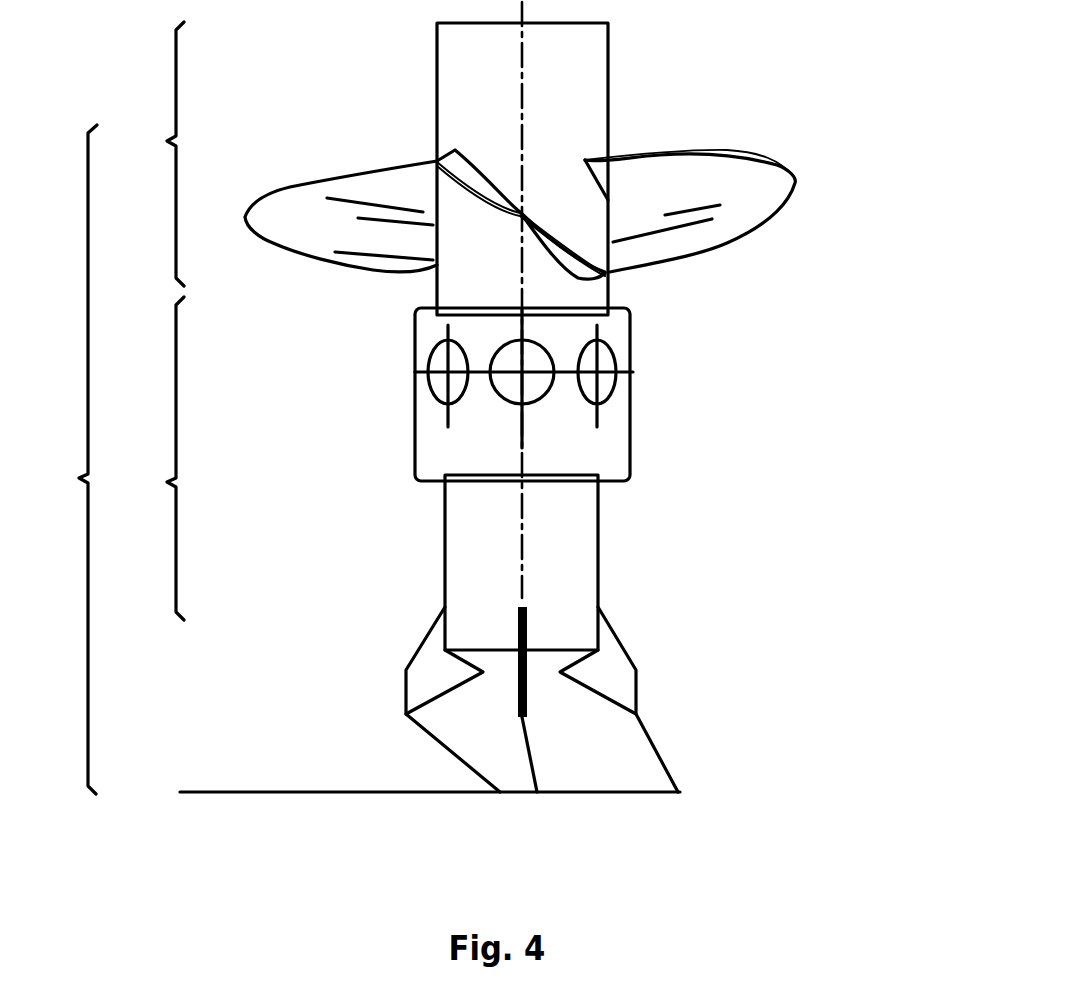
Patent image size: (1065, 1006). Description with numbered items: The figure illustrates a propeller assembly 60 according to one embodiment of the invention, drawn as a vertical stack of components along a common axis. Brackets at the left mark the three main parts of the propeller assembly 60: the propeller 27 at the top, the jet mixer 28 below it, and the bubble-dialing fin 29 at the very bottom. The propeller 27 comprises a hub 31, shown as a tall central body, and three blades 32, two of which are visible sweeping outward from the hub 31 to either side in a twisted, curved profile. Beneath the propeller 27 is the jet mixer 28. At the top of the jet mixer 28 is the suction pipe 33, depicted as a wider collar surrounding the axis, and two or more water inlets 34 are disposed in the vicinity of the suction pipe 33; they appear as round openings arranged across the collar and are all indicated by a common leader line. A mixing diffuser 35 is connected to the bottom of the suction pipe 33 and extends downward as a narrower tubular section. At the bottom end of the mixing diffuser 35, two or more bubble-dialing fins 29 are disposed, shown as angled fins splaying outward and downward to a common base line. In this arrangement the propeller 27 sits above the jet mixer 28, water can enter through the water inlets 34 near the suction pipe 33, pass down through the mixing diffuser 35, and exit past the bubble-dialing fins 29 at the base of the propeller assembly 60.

The propeller 27 is at (149, 154).
The jet mixer 28 is at (149, 458).
The bubble-dialing fin 29 is at (401, 786).
The hub 31 is at (588, 82).
The blades 32 is at (770, 196).
The suction pipe 33 is at (633, 398).
The water inlets 34 is at (597, 405).
The mixing diffuser 35 is at (605, 548).
The propeller assembly 60 is at (65, 459).